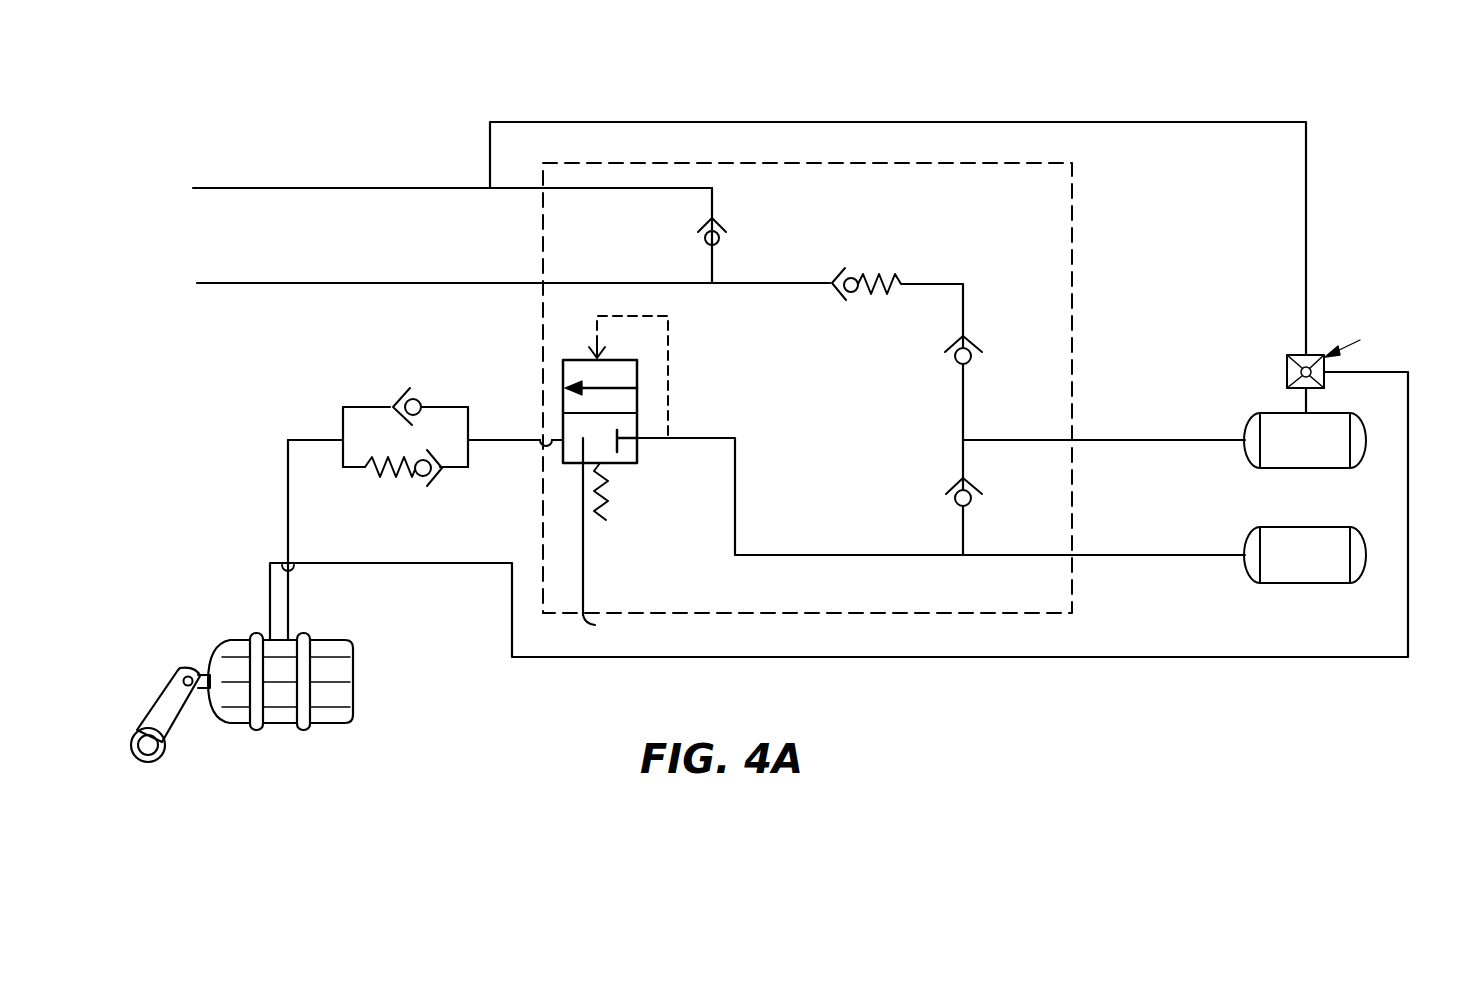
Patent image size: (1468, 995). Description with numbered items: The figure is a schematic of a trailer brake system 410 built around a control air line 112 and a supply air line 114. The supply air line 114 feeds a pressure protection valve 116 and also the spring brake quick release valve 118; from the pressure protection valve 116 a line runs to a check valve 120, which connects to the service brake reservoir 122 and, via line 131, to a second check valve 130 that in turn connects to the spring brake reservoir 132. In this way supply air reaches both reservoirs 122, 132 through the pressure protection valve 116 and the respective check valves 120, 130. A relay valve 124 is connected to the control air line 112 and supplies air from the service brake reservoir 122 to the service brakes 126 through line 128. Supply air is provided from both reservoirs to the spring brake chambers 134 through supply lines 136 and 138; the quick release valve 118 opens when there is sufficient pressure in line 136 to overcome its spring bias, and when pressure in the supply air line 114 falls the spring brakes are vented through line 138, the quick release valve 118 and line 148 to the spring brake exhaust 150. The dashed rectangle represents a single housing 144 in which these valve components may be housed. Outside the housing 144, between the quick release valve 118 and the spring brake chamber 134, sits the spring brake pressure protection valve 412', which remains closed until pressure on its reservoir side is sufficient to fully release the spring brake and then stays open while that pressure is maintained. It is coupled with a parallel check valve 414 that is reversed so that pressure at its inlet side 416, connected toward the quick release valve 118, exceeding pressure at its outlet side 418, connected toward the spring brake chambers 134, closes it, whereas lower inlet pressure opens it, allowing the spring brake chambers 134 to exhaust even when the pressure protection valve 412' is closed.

The brake system 410 is at (1100, 114).
The control air line 112 is at (490, 140).
The supply air line 114 is at (462, 284).
The housing 144 is at (834, 165).
The pressure protection valve 116 is at (902, 282).
The check valve 120 is at (972, 346).
The line 131 is at (966, 450).
The second check valve 130 is at (953, 490).
The supply line 136 is at (735, 496).
The spring brake quick release valve 118 is at (563, 390).
The line 148 is at (584, 556).
The spring brake exhaust 150 is at (594, 626).
The supply line 138 is at (548, 462).
The outlet side 418 is at (343, 420).
The parallel check valve 414 is at (393, 404).
The inlet side 416 is at (468, 407).
The spring brake pressure protection valve 412' is at (391, 491).
The line 128 is at (935, 657).
The relay valve 124 is at (1287, 374).
The service brake reservoir 122 is at (1285, 470).
The spring brake reservoir 132 is at (1296, 585).
The spring brake chambers 134 is at (338, 700).
The service brakes 126 is at (224, 652).